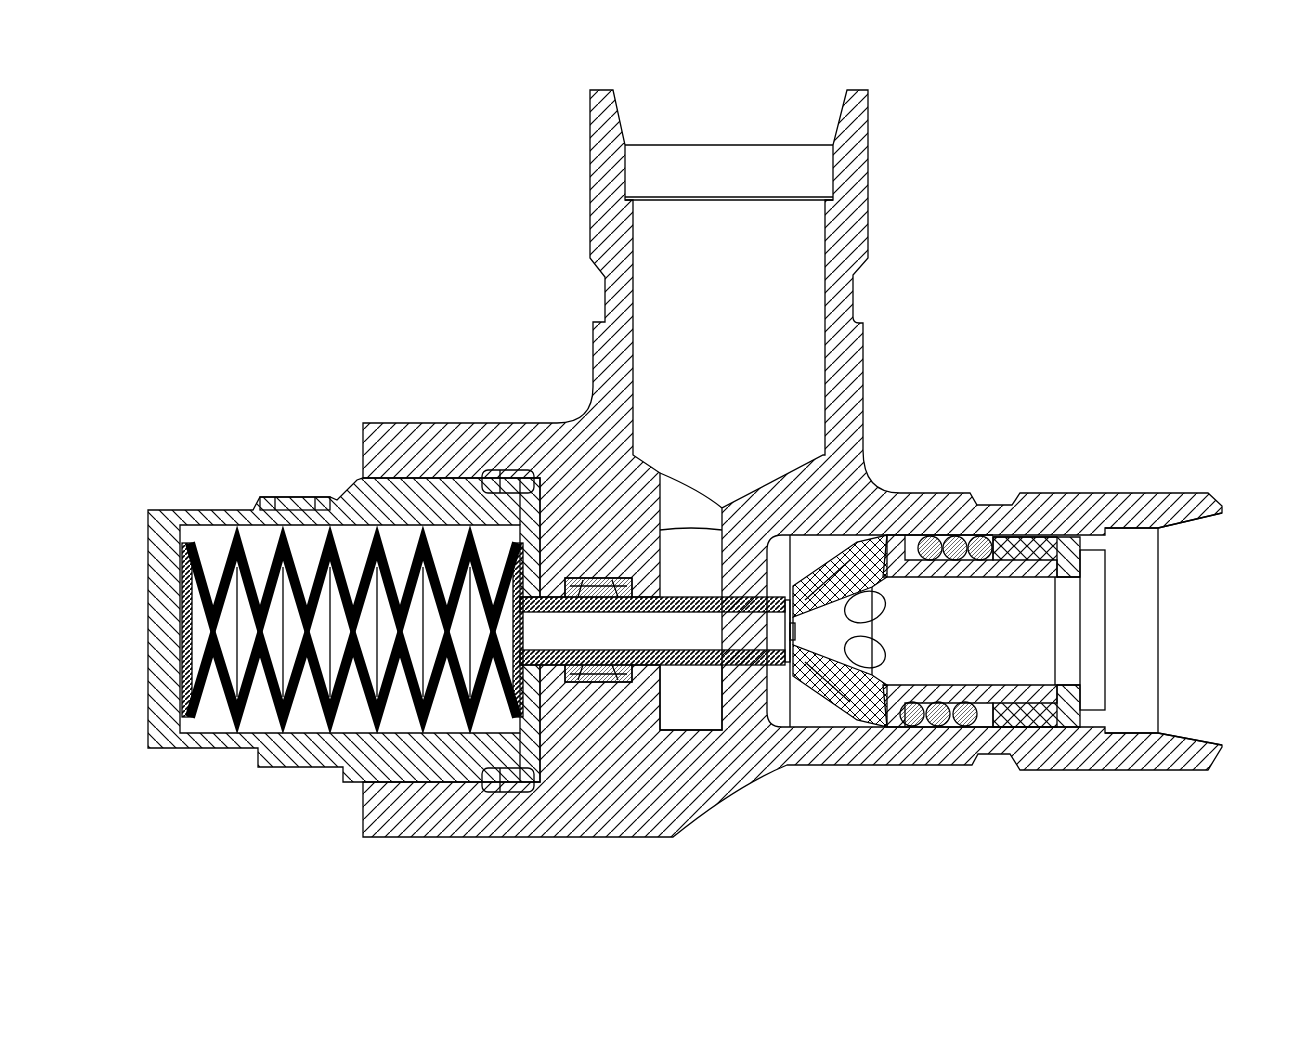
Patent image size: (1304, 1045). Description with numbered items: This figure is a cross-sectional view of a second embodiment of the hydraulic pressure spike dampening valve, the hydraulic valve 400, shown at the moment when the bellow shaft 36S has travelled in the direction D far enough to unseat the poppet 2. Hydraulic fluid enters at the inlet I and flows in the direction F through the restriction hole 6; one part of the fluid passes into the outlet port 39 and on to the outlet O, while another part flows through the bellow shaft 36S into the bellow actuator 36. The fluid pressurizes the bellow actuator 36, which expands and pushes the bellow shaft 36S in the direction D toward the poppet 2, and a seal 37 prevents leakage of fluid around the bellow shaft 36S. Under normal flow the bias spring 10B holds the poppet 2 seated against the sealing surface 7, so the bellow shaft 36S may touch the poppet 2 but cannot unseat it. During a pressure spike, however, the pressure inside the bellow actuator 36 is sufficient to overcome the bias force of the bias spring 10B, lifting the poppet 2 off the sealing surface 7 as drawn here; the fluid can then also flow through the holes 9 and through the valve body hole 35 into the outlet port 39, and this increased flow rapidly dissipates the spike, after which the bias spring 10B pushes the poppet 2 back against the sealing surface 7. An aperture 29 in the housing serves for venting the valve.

The hydraulic valve 400 is at (1095, 236).
The outlet port 39 is at (863, 188).
The sealing surface 7 is at (748, 680).
The valve body hole 35 is at (738, 674).
The aperture 29 is at (300, 517).
The bellow actuator 36 is at (220, 690).
The bellow shaft 36S is at (553, 680).
The seal 37 is at (602, 678).
The poppet 2 is at (888, 542).
The bias spring 10B is at (990, 537).
The restriction hole 6 is at (833, 685).
The holes 9 is at (878, 662).
The outlet O is at (810, 92).
The inlet I is at (1208, 553).
The direction of flow F is at (725, 32).
The direction of bellow shaft travel D is at (708, 672).